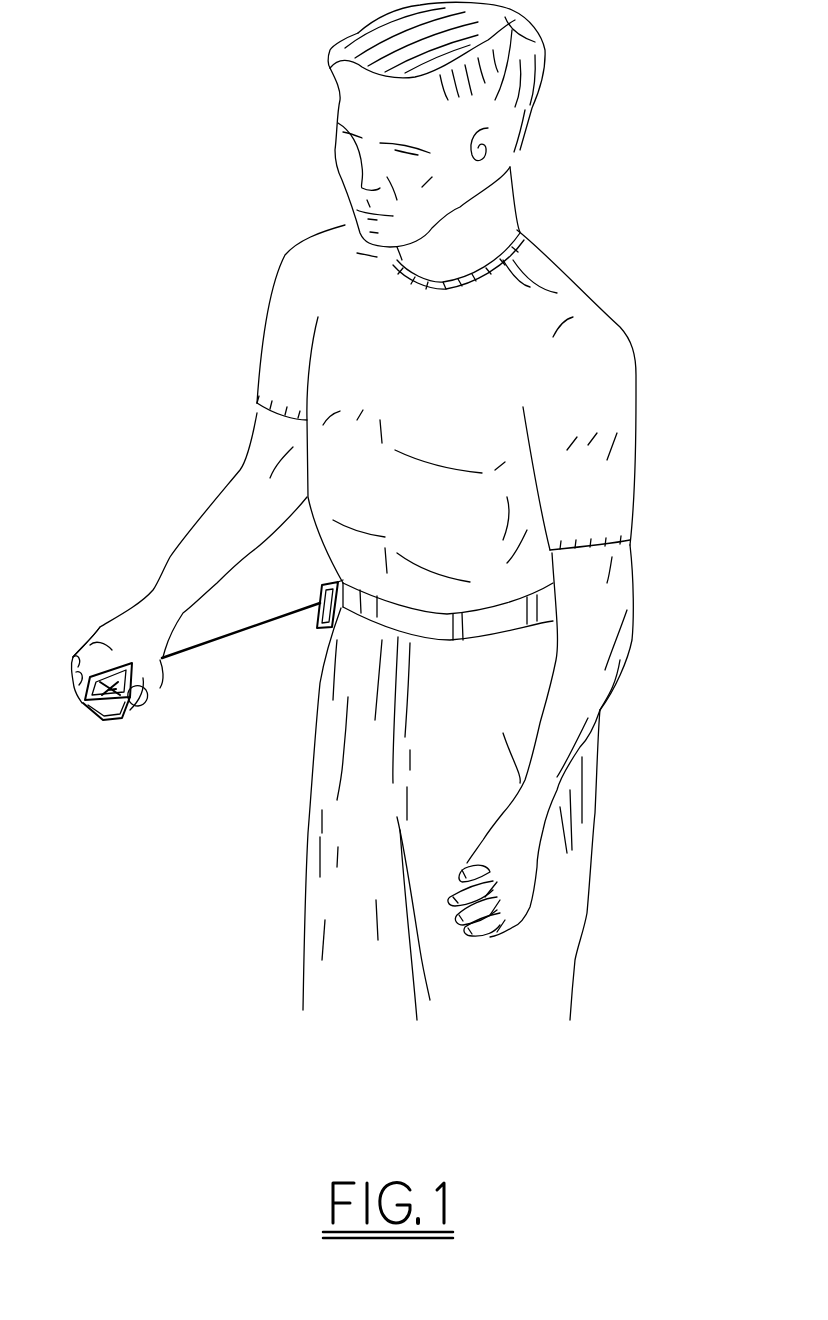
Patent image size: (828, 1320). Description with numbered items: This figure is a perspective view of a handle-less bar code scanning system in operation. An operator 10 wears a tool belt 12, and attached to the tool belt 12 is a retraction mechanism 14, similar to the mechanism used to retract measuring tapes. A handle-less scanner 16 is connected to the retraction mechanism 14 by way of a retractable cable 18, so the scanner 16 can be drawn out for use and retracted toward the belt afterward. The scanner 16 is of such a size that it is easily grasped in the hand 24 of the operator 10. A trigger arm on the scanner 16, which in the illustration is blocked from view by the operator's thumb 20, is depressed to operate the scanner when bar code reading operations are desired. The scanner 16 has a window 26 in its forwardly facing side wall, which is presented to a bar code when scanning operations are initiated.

The operator 10 is at (636, 450).
The tool belt 12 is at (477, 640).
The retraction mechanism 14 is at (313, 610).
The handle-less scanner 16 is at (120, 723).
The retractable cable 18 is at (252, 597).
The operator's thumb 20 is at (150, 697).
The hand 24 is at (113, 620).
The window 26 is at (93, 710).